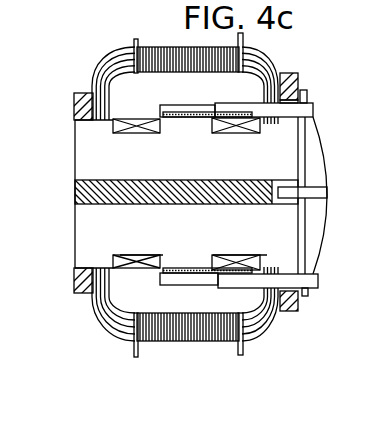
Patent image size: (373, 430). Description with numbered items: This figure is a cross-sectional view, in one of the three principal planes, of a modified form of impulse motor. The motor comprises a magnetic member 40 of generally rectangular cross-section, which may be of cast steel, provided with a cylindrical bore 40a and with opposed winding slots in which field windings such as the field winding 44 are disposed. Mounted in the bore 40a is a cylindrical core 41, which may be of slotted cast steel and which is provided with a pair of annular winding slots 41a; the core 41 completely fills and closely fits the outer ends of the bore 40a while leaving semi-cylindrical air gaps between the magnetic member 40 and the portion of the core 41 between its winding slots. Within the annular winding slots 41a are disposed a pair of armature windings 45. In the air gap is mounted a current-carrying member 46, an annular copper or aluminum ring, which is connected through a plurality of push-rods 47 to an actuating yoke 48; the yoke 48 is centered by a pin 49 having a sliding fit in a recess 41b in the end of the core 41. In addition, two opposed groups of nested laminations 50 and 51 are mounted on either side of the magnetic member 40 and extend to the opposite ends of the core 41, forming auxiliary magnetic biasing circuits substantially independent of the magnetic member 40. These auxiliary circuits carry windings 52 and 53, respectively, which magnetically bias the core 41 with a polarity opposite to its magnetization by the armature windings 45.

The magnetic member 40 is at (77, 288).
The cylindrical bore 40a is at (88, 267).
The cylindrical core 41 is at (85, 160).
The annular winding slots 41a is at (227, 255).
The recess 41b is at (290, 204).
The field winding 44 is at (98, 7).
The armature windings 45 is at (113, 131).
The current-carrying member 46 is at (160, 108).
The push-rods 47 is at (308, 106).
The actuating yoke 48 is at (312, 166).
The pin 49 is at (324, 192).
The nested laminations 50 is at (257, 63).
The nested laminations 51 is at (259, 324).
The winding 52 is at (178, 45).
The winding 53 is at (193, 342).